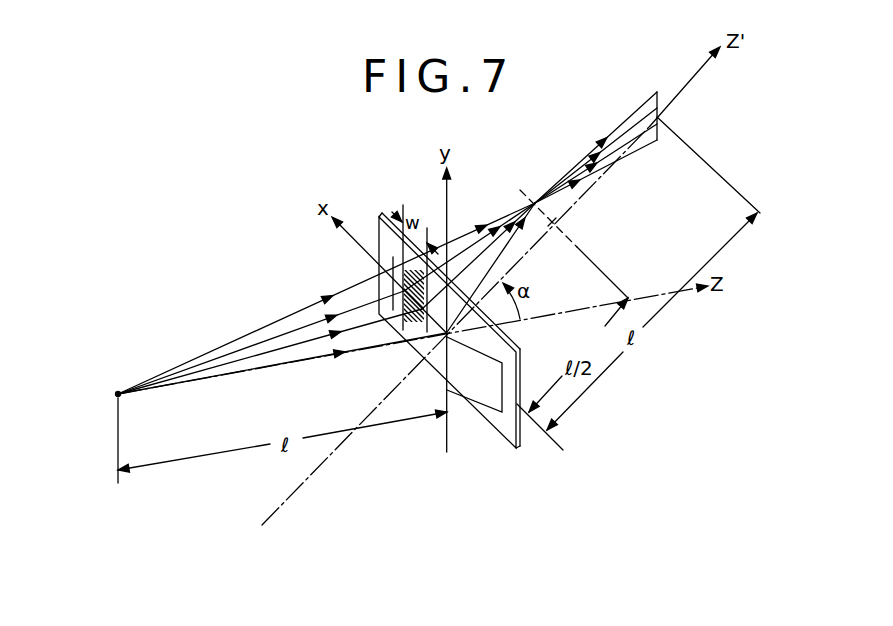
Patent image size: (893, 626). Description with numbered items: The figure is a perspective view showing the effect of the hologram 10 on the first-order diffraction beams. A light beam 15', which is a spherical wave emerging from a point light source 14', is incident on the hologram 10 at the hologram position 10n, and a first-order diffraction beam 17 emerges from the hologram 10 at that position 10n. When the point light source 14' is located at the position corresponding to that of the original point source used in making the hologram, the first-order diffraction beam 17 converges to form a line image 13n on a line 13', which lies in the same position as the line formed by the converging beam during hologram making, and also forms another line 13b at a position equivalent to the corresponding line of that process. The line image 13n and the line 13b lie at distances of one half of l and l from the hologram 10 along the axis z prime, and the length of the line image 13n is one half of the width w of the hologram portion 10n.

The hologram 10 is at (392, 212).
The hologram position 10n is at (401, 337).
The line image 13n is at (537, 196).
The line 13b is at (659, 90).
The line 13' is at (574, 244).
The point light source 14' is at (93, 406).
The light beam 15' is at (326, 298).
The first-order diffraction beam 17 is at (469, 236).